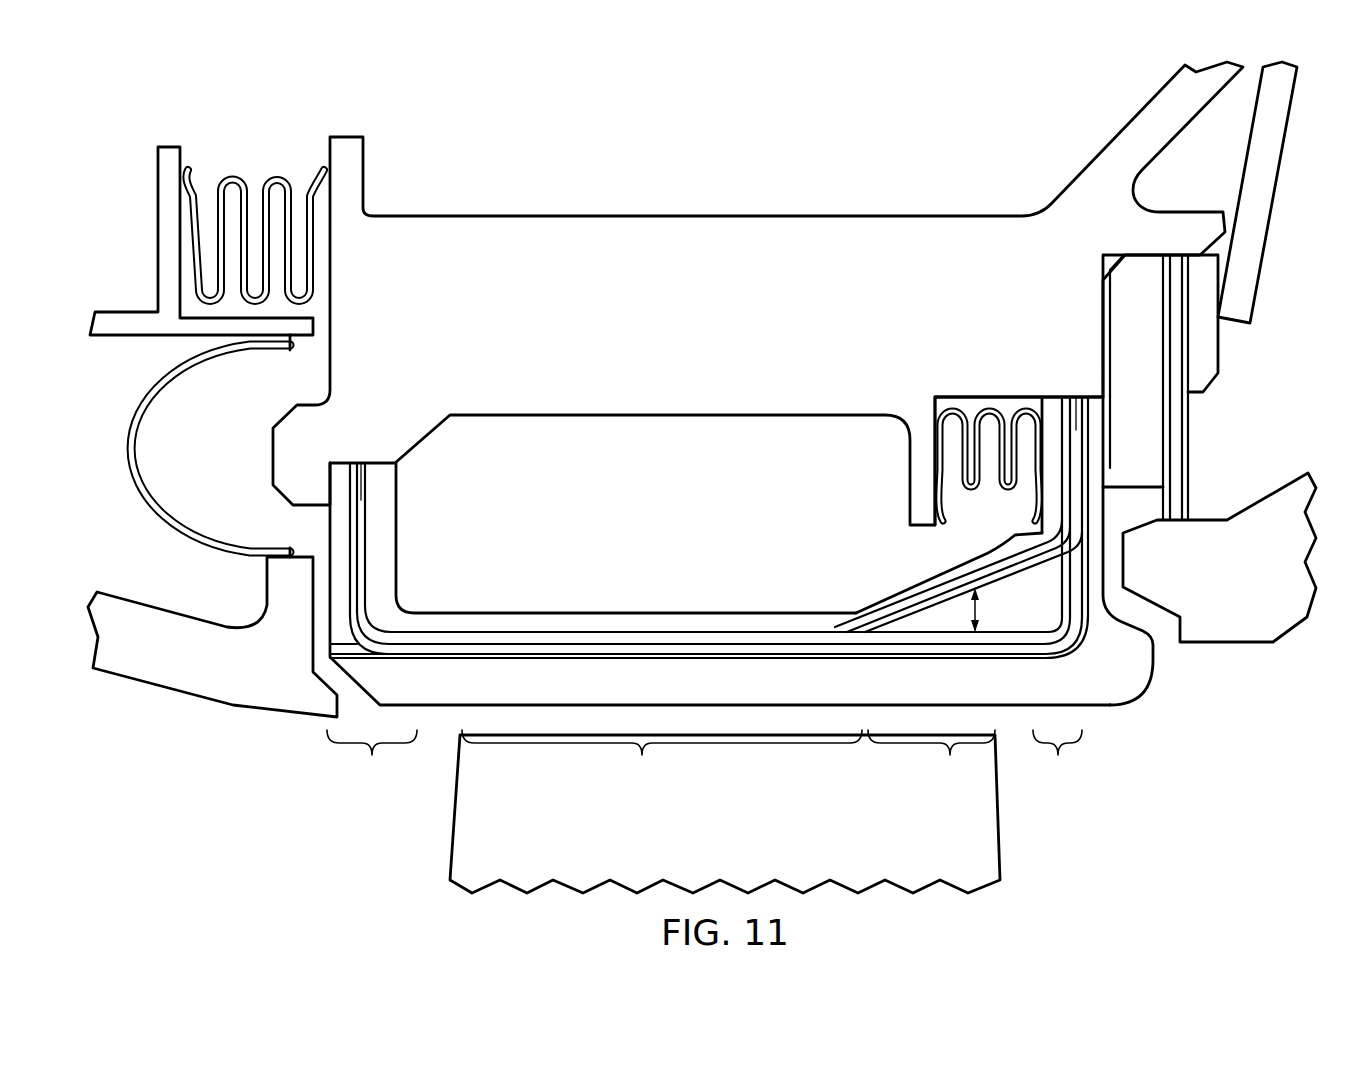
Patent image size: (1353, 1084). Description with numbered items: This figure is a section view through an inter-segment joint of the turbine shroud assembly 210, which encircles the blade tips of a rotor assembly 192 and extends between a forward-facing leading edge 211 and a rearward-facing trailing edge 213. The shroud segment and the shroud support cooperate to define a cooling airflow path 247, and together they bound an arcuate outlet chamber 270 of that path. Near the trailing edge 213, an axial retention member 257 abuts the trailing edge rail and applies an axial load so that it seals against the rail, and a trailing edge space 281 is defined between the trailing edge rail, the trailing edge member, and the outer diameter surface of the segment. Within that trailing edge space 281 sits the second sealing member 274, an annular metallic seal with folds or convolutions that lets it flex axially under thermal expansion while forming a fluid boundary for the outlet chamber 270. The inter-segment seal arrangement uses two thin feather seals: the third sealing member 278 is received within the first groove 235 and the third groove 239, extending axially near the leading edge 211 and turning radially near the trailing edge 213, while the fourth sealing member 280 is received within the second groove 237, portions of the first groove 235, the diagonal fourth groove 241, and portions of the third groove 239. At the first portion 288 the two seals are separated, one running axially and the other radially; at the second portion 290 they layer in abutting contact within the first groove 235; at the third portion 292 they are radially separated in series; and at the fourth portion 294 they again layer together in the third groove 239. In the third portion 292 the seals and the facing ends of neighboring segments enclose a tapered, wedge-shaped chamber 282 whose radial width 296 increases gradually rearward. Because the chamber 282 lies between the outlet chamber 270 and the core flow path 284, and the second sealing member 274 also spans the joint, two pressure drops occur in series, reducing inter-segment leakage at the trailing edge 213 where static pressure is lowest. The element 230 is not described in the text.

The rotor assembly 192 is at (694, 850).
The turbine shroud assembly 210 is at (223, 134).
The leading edge 211 is at (329, 603).
The trailing edge 213 is at (1103, 422).
The heat shield panel 230 is at (752, 708).
The first groove 235 is at (578, 658).
The second groove 237 is at (375, 520).
The third groove 239 is at (1082, 398).
The fourth groove 241 is at (885, 623).
The cooling airflow path 247 is at (600, 432).
The axial retention member 257 is at (1150, 452).
The outlet chamber 270 is at (622, 535).
The second sealing member 274 is at (943, 456).
The third sealing member 278 is at (1070, 638).
The fourth sealing member 280 is at (930, 602).
The trailing edge space 281 is at (1006, 404).
The chamber 282 is at (998, 633).
The core flow path 284 is at (1187, 810).
The first portion 288 is at (372, 761).
The second portion 290 is at (662, 761).
The third portion 292 is at (931, 761).
The fourth portion 294 is at (1058, 761).
The width 296 is at (983, 614).